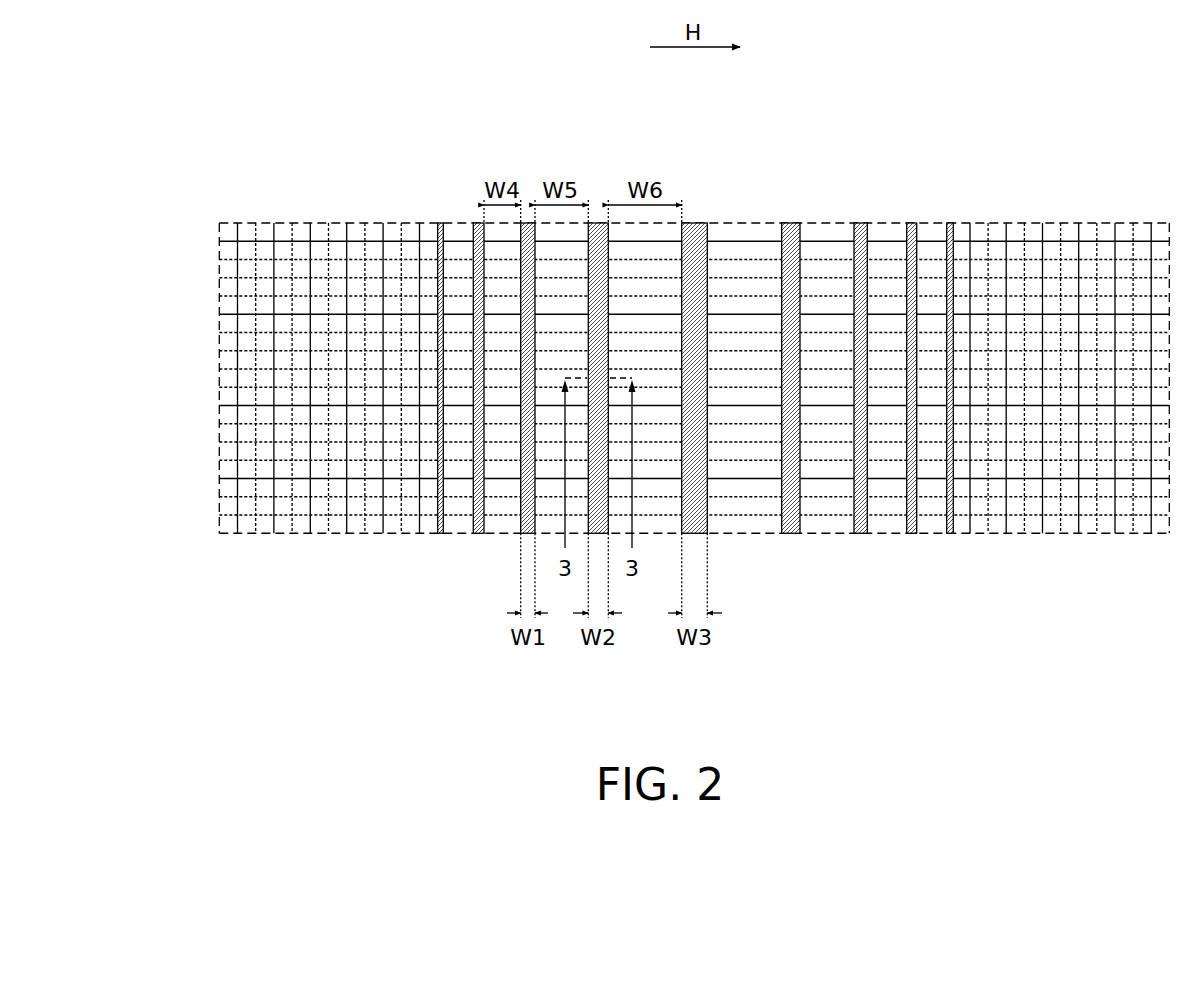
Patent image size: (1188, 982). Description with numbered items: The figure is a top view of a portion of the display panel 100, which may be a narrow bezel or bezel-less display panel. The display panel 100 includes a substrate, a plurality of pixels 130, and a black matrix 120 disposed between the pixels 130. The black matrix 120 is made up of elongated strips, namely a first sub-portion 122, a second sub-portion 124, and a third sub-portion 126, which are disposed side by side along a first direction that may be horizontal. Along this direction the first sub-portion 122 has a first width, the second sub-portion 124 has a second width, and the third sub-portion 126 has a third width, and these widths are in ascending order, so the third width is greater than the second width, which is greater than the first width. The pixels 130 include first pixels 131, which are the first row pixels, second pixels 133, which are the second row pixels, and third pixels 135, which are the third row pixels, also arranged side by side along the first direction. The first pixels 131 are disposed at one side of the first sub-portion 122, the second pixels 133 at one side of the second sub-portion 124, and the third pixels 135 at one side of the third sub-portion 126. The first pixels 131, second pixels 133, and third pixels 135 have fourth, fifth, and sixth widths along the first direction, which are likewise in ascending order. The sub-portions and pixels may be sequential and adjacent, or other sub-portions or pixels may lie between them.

The display panel 100 is at (165, 45).
The black matrix 120 is at (505, 133).
The first sub-portion 122 is at (529, 224).
The second sub-portion 124 is at (599, 224).
The third sub-portion 126 is at (696, 224).
The pixels 130 is at (438, 690).
The first pixels 131 is at (503, 520).
The second pixels 133 is at (547, 520).
The third pixels 135 is at (650, 520).